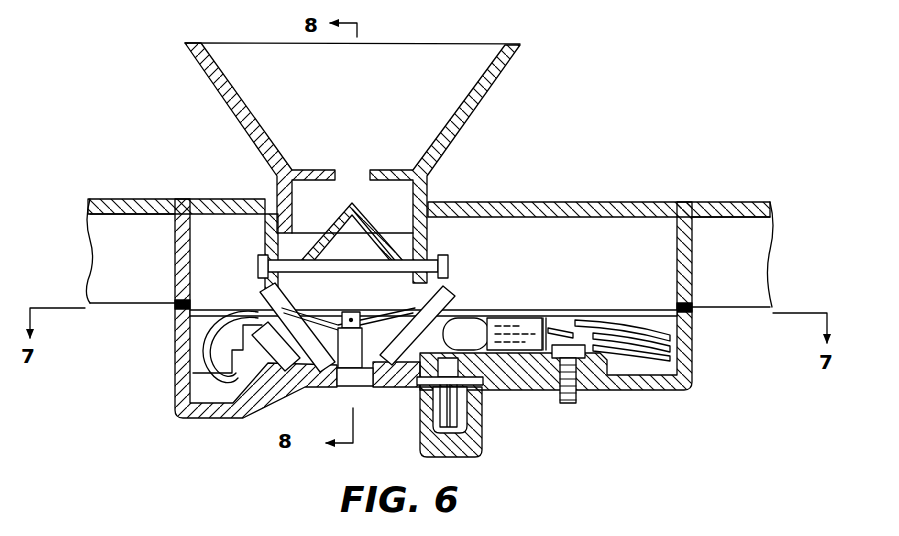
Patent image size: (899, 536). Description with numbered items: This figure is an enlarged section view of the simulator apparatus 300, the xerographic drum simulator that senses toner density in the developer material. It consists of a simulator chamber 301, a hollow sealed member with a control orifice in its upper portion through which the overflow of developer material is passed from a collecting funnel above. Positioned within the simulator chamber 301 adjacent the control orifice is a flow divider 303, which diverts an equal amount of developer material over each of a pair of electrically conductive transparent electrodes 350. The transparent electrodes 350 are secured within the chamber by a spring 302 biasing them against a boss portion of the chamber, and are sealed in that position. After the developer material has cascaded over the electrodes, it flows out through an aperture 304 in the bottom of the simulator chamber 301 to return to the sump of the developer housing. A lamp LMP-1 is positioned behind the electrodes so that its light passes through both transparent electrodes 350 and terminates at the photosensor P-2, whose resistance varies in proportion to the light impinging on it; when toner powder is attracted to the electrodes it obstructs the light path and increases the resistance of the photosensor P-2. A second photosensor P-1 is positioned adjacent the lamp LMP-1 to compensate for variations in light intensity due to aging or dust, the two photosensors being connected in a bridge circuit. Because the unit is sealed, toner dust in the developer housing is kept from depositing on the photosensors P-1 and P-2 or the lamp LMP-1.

The simulator apparatus 300 is at (162, 345).
The simulator chamber 301 is at (178, 409).
The spring 302 is at (300, 311).
The flow divider 303 is at (338, 231).
The aperture 304 is at (353, 380).
The transparent electrodes 350 is at (262, 292).
The lamp LMP-1 is at (468, 318).
The photosensor P-1 is at (475, 386).
The photosensor P-2 is at (270, 366).